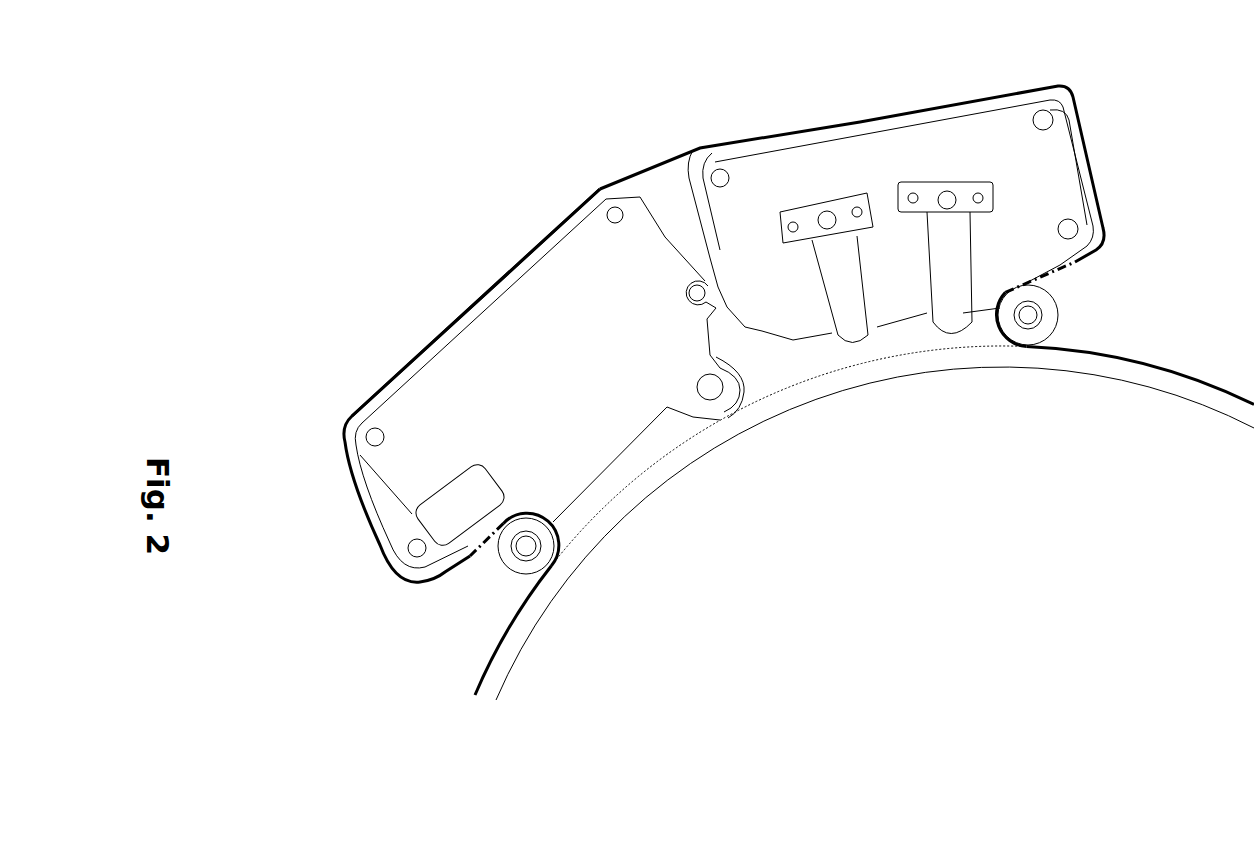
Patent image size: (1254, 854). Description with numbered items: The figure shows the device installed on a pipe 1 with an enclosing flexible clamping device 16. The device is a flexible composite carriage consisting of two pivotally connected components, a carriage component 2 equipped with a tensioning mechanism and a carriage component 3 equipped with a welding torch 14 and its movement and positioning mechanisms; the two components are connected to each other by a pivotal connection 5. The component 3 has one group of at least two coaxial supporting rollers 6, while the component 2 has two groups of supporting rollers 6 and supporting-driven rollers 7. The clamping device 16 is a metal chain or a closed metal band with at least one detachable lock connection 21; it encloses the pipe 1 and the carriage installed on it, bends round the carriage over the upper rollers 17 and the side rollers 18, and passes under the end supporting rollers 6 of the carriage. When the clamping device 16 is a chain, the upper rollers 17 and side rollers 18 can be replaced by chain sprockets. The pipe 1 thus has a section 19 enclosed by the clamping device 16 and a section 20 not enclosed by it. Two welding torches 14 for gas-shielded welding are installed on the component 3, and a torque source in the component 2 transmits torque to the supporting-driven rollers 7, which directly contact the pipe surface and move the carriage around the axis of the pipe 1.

The pipe 1 is at (662, 509).
The carriage component equipped with tensioning mechanism 2 is at (485, 334).
The carriage component equipped with welding torch and its movement and positioning 3 is at (850, 118).
The pivotal connection of the flexible composite carriage components 5 is at (677, 282).
The supporting rollers 6 is at (1030, 365).
The supporting-driven rollers 7 is at (738, 426).
The welding torch 14 is at (949, 314).
The clamping device in the form of metal chain or band 16 is at (346, 499).
The upper rollers or chain sprockets 17 is at (590, 175).
The side rollers or chain sprockets 18 is at (373, 552).
The pipe section enclosed by the clamping device 19 is at (1152, 345).
The pipe section not enclosed by the clamping device 20 is at (784, 409).
The detachable connection of the clamping device 21 is at (483, 269).